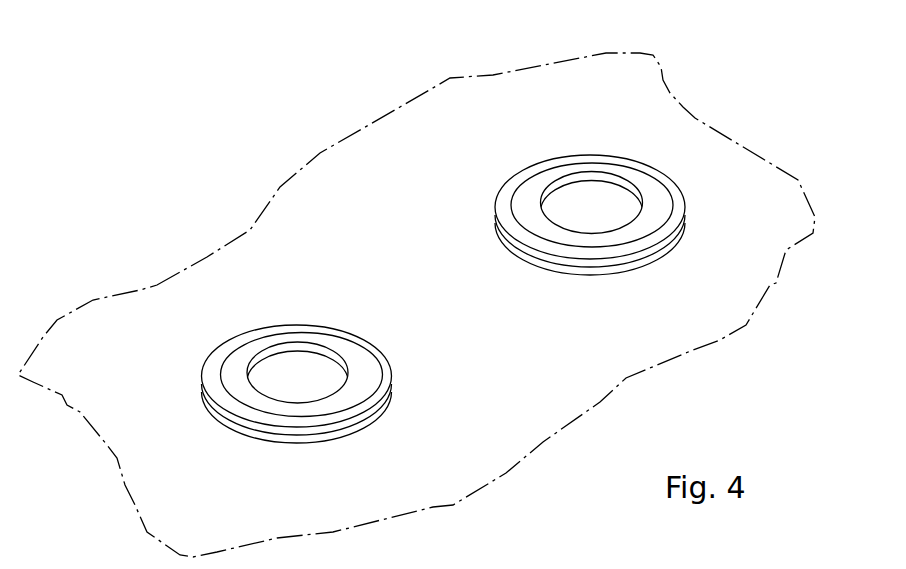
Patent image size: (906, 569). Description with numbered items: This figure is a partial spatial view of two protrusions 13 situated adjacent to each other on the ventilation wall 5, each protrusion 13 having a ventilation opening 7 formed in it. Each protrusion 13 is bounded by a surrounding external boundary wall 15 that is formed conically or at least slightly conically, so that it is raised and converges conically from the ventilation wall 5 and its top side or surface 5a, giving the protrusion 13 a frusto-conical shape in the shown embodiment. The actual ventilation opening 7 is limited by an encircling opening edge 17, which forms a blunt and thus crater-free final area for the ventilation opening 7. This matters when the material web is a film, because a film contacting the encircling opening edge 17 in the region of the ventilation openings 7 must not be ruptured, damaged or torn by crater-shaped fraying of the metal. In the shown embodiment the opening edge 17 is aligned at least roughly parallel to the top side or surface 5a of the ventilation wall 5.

The ventilation wall 5 is at (416, 305).
The top side or surface of the ventilation wall 5a is at (432, 204).
The protrusion 13 is at (573, 150).
The encircling opening edge 17 is at (613, 173).
The ventilation opening 7 is at (320, 376).
The external boundary wall 15 is at (658, 262).